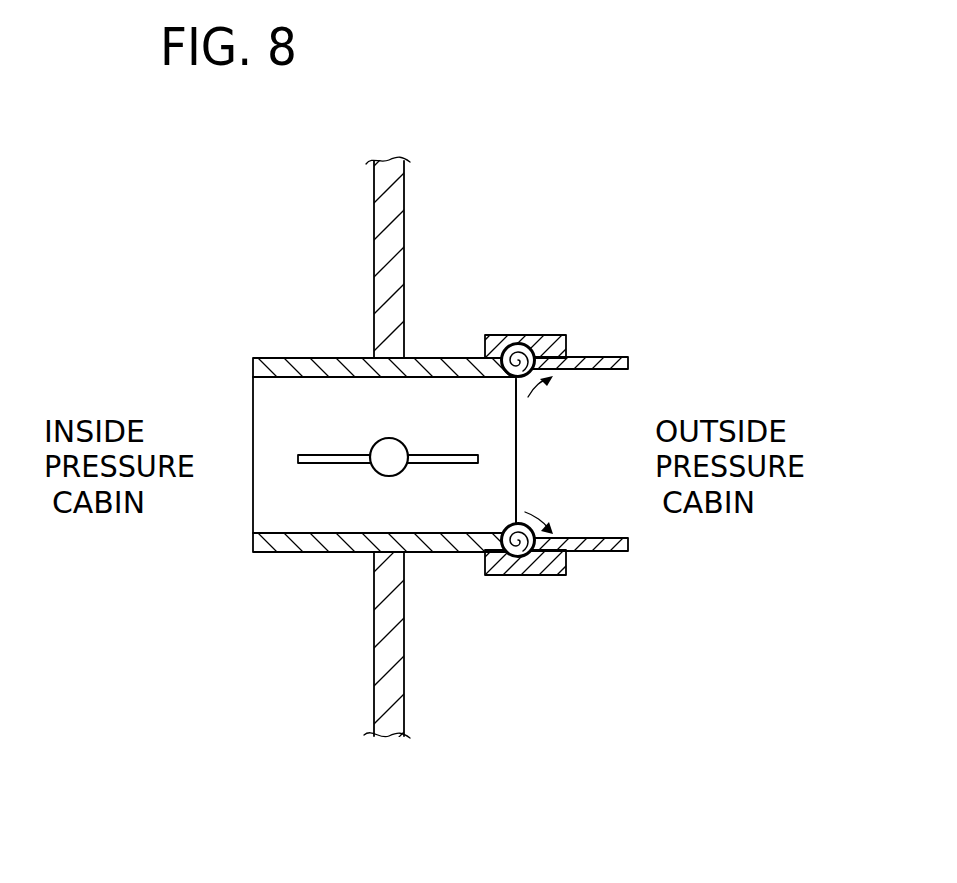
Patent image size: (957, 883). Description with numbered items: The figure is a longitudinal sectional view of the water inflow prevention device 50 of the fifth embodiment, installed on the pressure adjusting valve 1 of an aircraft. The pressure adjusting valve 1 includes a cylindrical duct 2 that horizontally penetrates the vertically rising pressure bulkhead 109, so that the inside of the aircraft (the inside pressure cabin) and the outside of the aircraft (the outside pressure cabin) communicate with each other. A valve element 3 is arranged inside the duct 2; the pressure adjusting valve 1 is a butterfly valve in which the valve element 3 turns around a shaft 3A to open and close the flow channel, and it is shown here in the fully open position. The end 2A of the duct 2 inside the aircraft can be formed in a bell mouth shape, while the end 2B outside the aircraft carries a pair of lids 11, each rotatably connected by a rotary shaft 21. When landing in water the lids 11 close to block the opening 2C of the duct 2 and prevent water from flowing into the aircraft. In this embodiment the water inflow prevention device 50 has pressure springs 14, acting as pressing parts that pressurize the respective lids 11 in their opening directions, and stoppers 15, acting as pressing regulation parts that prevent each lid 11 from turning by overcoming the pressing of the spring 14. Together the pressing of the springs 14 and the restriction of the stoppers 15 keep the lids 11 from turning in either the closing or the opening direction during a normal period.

The pressure adjusting valve 1 is at (253, 316).
The duct 2 is at (427, 358).
The end of the duct inside the aircraft 2A is at (280, 358).
The end of the duct outside the aircraft 2B is at (485, 335).
The opening of the duct 2C is at (516, 480).
The valve element 3 is at (312, 452).
The shaft 3A is at (407, 446).
The lid 11 is at (623, 357).
The pressure spring 14 is at (516, 352).
The stopper 15 is at (555, 335).
The rotary shaft 21 is at (520, 345).
The water inflow prevention device 50 is at (606, 316).
The pressure bulkhead 109 is at (374, 222).